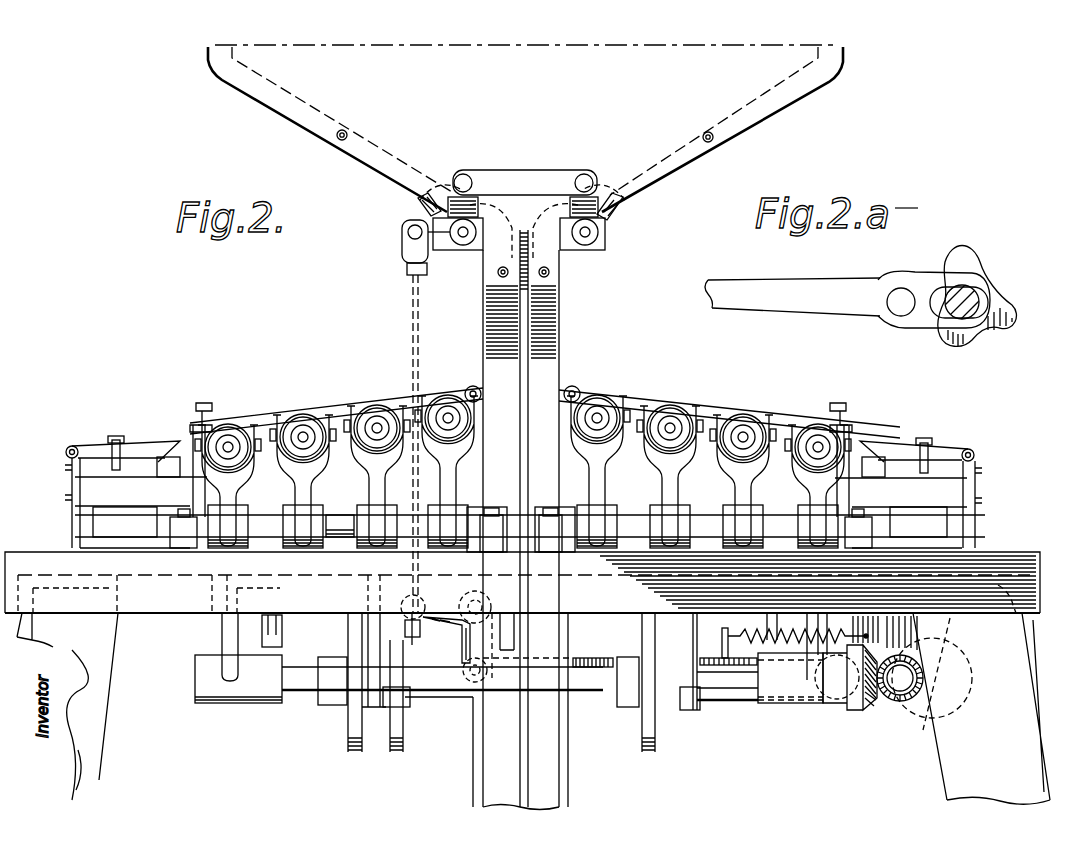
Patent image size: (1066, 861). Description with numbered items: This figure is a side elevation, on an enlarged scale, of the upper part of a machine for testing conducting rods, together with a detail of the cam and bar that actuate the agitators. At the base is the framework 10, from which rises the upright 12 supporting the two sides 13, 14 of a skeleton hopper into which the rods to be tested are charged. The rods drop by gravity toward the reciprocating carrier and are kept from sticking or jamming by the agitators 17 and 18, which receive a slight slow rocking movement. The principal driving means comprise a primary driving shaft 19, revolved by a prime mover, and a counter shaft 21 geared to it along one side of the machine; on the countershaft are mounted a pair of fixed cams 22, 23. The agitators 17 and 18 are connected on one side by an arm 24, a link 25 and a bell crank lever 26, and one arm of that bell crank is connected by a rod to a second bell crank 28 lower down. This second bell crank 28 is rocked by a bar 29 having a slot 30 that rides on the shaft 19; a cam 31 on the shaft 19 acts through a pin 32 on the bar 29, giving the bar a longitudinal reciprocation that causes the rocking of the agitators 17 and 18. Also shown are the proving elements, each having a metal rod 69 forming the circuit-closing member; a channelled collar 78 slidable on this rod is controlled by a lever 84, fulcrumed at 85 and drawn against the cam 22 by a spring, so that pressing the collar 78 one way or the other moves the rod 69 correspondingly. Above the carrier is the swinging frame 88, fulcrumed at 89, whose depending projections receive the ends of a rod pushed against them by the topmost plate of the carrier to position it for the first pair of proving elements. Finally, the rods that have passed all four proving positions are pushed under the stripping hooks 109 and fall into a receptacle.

In FIG. 2, the framework 10 is at (55, 646).
In FIG. 2, the upright 12 is at (550, 340).
In FIG. 2, the hopper side 13 is at (280, 112).
In FIG. 2, the hopper side 14 is at (795, 97).
In FIG. 2, the agitator 17 is at (418, 203).
In FIG. 2, the agitator 18 is at (642, 212).
In FIG. 2, the primary driving shaft 19 is at (903, 678).
In FIG. 2a, the primary driving shaft 19 is at (968, 298).
In FIG. 2, the counter shaft 21 is at (742, 685).
In FIG. 2, the cam 22 is at (675, 768).
In FIG. 2, the cam 23 is at (692, 712).
In FIG. 2, the arm 24 is at (600, 222).
In FIG. 2, the link 25 is at (525, 168).
In FIG. 2, the bell crank lever 26 is at (432, 255).
In FIG. 2, the second bell crank 28 is at (440, 625).
In FIG. 2, the bar 29 is at (600, 697).
In FIG. 2a, the bar 29 is at (752, 302).
In FIG. 2a, the slot 30 is at (942, 312).
In FIG. 2, the cam 31 is at (958, 697).
In FIG. 2a, the cam 31 is at (1008, 318).
In FIG. 2, the pin 32 is at (840, 688).
In FIG. 2a, the pin 32 is at (895, 310).
In FIG. 2, the metal rod 69 is at (818, 445).
In FIG. 2, the collar 78 is at (684, 442).
In FIG. 2, the lever 84 is at (668, 488).
In FIG. 2, the fulcrum 85 is at (340, 515).
In FIG. 2, the swinging frame 88 is at (672, 404).
In FIG. 2, the fulcrum 89 is at (580, 388).
In FIG. 2, the stripping hook 109 is at (892, 455).